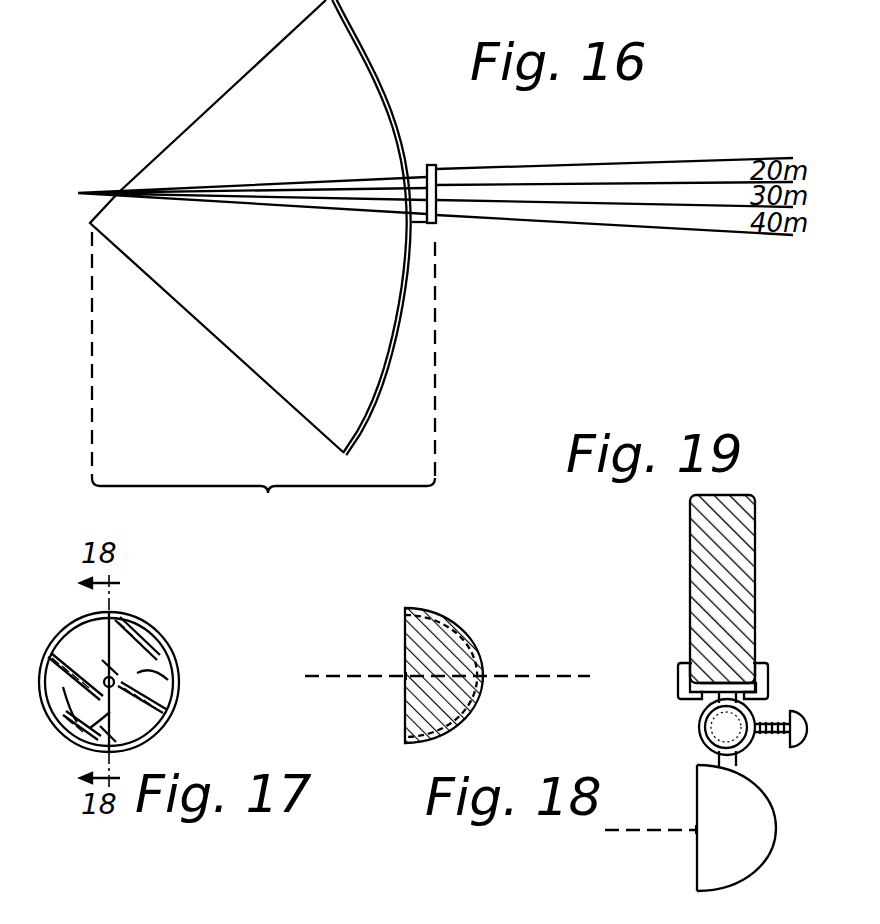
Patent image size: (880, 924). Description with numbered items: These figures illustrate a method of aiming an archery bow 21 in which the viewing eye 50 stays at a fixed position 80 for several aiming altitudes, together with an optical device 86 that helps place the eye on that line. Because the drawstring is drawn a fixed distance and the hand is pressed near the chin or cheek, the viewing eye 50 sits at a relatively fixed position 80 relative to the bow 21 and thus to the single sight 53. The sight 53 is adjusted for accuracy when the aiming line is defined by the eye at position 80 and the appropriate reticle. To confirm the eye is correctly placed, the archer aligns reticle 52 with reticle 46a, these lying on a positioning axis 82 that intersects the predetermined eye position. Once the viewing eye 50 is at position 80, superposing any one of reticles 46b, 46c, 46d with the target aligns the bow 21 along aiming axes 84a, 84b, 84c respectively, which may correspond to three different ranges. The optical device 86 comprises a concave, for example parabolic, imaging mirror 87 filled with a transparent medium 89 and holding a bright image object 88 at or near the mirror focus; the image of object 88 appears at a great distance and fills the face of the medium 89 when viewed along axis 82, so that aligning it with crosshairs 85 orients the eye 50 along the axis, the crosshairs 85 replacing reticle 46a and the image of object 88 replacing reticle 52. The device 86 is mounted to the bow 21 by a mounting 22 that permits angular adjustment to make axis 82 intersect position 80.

In FIG. 16, the archery bow 21 is at (383, 363).
In FIG. 19, the archery bow 21 is at (740, 553).
In FIG. 19, the mounting 22 is at (757, 757).
In FIG. 16, the reticle 46a is at (434, 167).
In FIG. 16, the reticle 46b is at (438, 181).
In FIG. 16, the reticle 46c is at (438, 201).
In FIG. 16, the reticle 46d is at (437, 219).
In FIG. 16, the viewing eye 50 is at (74, 200).
In FIG. 16, the reticle 52 is at (258, 183).
In FIG. 16, the single sight 53 is at (431, 226).
In FIG. 16, the position 80 is at (80, 193).
In FIG. 16, the positioning axis 82 is at (690, 162).
In FIG. 18, the positioning axis 82 is at (372, 645).
In FIG. 19, the positioning axis 82 is at (625, 832).
In FIG. 16, the aiming axis 84a is at (728, 182).
In FIG. 16, the aiming axis 84b is at (692, 207).
In FIG. 16, the aiming axis 84c is at (742, 234).
In FIG. 17, the crosshairs 85 is at (76, 738).
In FIG. 17, the optical device 86 is at (205, 548).
In FIG. 19, the optical device 86 is at (750, 846).
In FIG. 17, the concave imaging mirror 87 is at (178, 656).
In FIG. 18, the concave imaging mirror 87 is at (428, 622).
In FIG. 17, the bright image object 88 is at (150, 708).
In FIG. 18, the bright image object 88 is at (403, 678).
In FIG. 17, the transparent medium 89 is at (45, 682).
In FIG. 18, the transparent medium 89 is at (445, 660).